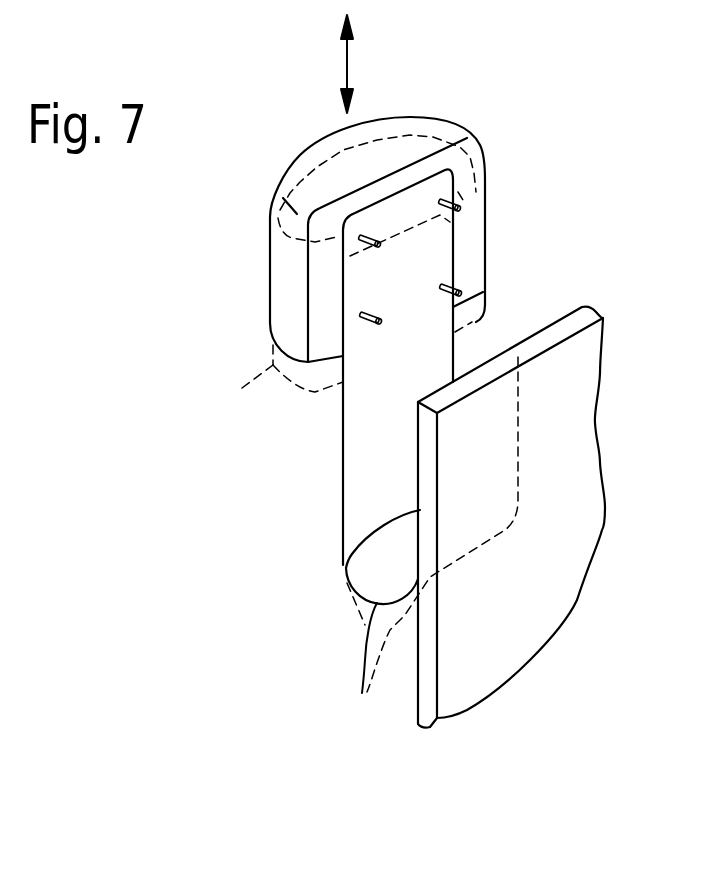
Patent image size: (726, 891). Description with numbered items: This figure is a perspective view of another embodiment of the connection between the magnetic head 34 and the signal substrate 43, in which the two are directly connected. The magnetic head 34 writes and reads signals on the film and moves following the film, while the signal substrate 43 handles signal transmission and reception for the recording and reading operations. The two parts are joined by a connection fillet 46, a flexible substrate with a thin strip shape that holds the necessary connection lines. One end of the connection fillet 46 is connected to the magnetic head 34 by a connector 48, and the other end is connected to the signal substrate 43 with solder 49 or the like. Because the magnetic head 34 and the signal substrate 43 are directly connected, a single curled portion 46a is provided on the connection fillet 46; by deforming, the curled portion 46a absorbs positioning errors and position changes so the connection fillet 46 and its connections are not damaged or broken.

The magnetic head 34 is at (286, 311).
The signal substrate 43 is at (580, 523).
The connection fillet 46 is at (345, 453).
The curled portion 46a is at (425, 546).
The connector 48 is at (460, 199).
The solder 49 is at (347, 565).